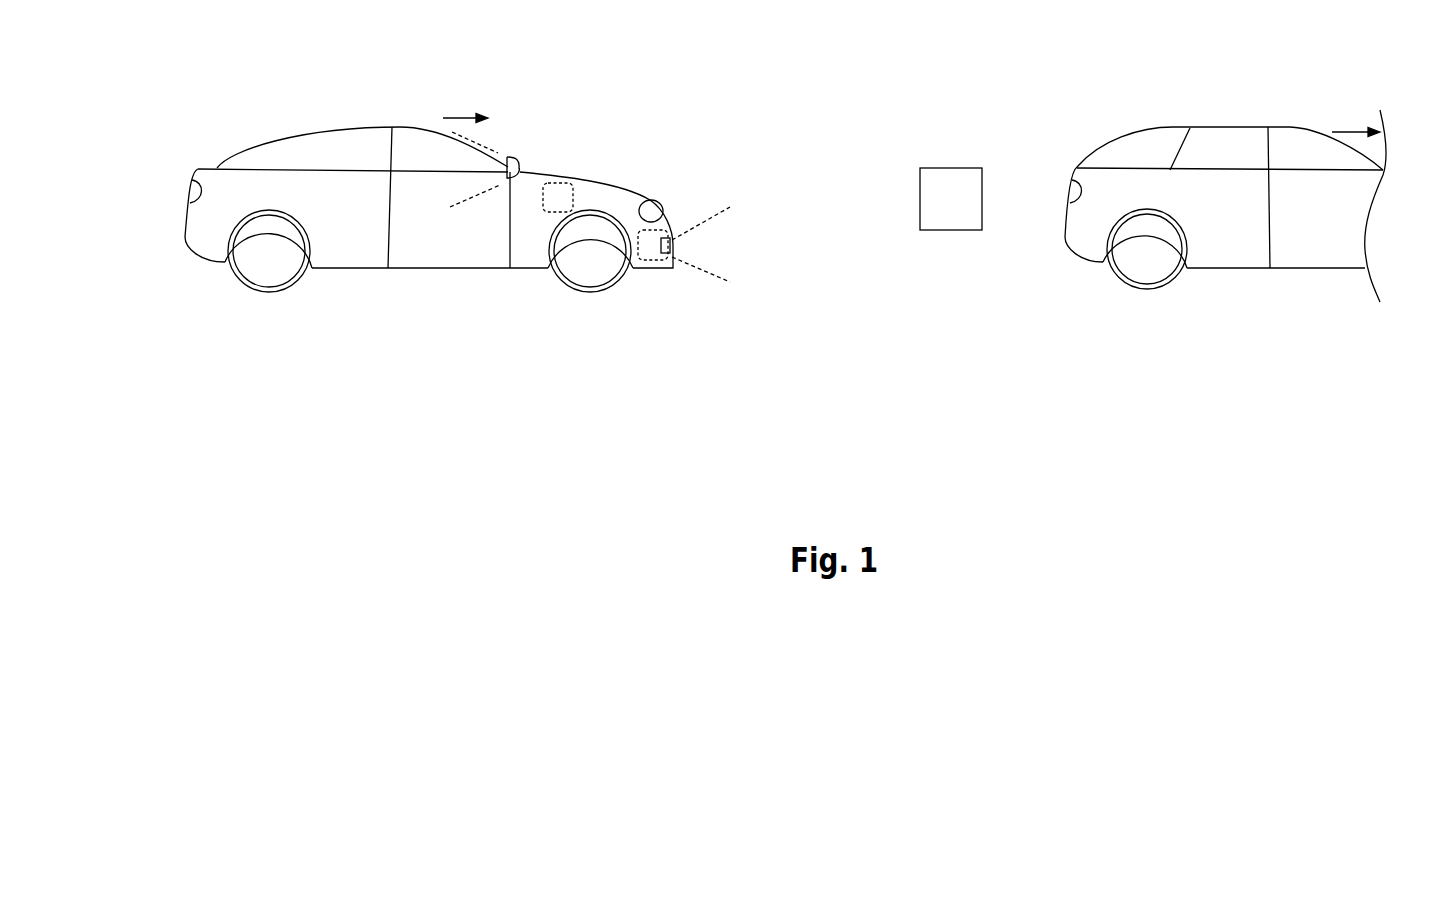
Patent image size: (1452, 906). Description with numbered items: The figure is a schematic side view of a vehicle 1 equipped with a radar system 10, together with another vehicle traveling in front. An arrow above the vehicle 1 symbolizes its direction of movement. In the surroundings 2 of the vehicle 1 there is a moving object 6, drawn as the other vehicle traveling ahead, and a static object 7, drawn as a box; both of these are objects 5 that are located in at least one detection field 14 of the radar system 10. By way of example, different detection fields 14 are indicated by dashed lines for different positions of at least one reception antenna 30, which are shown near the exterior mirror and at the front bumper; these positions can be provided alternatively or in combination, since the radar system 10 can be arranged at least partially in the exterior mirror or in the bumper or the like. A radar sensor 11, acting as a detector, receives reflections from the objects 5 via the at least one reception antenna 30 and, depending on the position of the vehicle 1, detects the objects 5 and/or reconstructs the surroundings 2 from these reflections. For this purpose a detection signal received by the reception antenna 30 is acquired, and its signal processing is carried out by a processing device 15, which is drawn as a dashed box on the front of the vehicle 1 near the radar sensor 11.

The vehicle 1 is at (605, 183).
The surroundings 2 is at (1146, 176).
The objects 5 is at (957, 250).
The moving object 6 is at (1177, 127).
The static object 7 is at (942, 215).
The radar system 10 is at (525, 202).
The radar sensor 11 is at (652, 262).
The detection field 14 is at (483, 200).
The processing device 15 is at (557, 187).
The reception antenna 30 is at (508, 155).